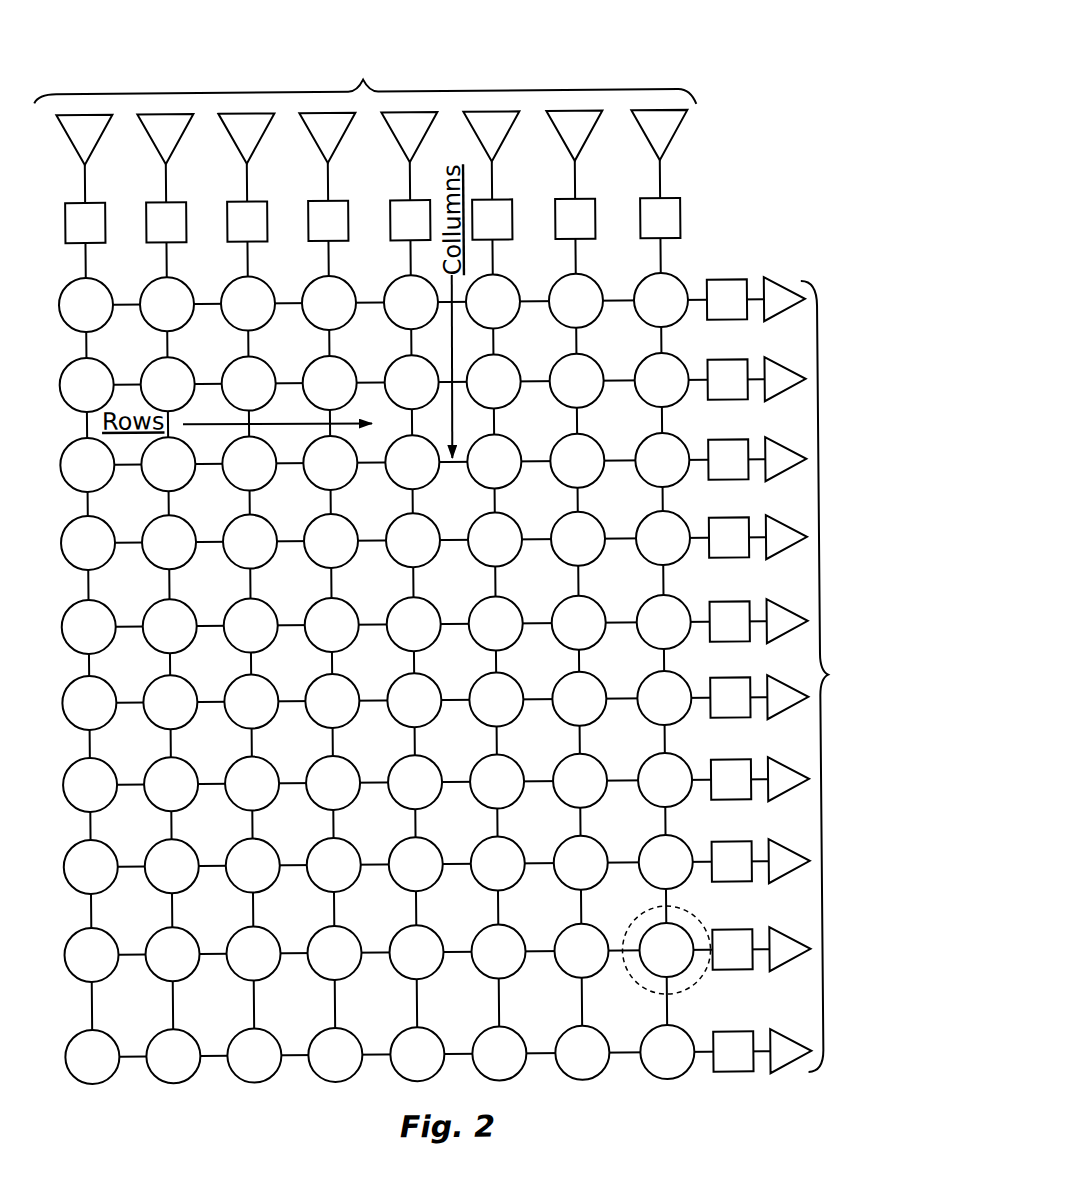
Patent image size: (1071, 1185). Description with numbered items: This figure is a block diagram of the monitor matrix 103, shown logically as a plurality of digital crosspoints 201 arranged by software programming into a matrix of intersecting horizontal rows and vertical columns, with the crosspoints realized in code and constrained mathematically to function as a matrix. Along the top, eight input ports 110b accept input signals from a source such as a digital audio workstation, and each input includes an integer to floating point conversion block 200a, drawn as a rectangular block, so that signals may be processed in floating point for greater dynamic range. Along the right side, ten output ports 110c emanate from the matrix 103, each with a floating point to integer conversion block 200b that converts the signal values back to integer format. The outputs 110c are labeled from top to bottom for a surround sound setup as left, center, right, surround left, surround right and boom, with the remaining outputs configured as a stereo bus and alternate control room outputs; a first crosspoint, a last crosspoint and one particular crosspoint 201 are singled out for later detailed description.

The monitor matrix 103 is at (732, 114).
The input port 110b is at (365, 82).
The output port 110c is at (825, 681).
The integer to floating point (I-F) conversion block 200a is at (691, 223).
The floating point to integer (F-I) conversion block 200b is at (726, 283).
The digital crosspoint 201 is at (686, 277).